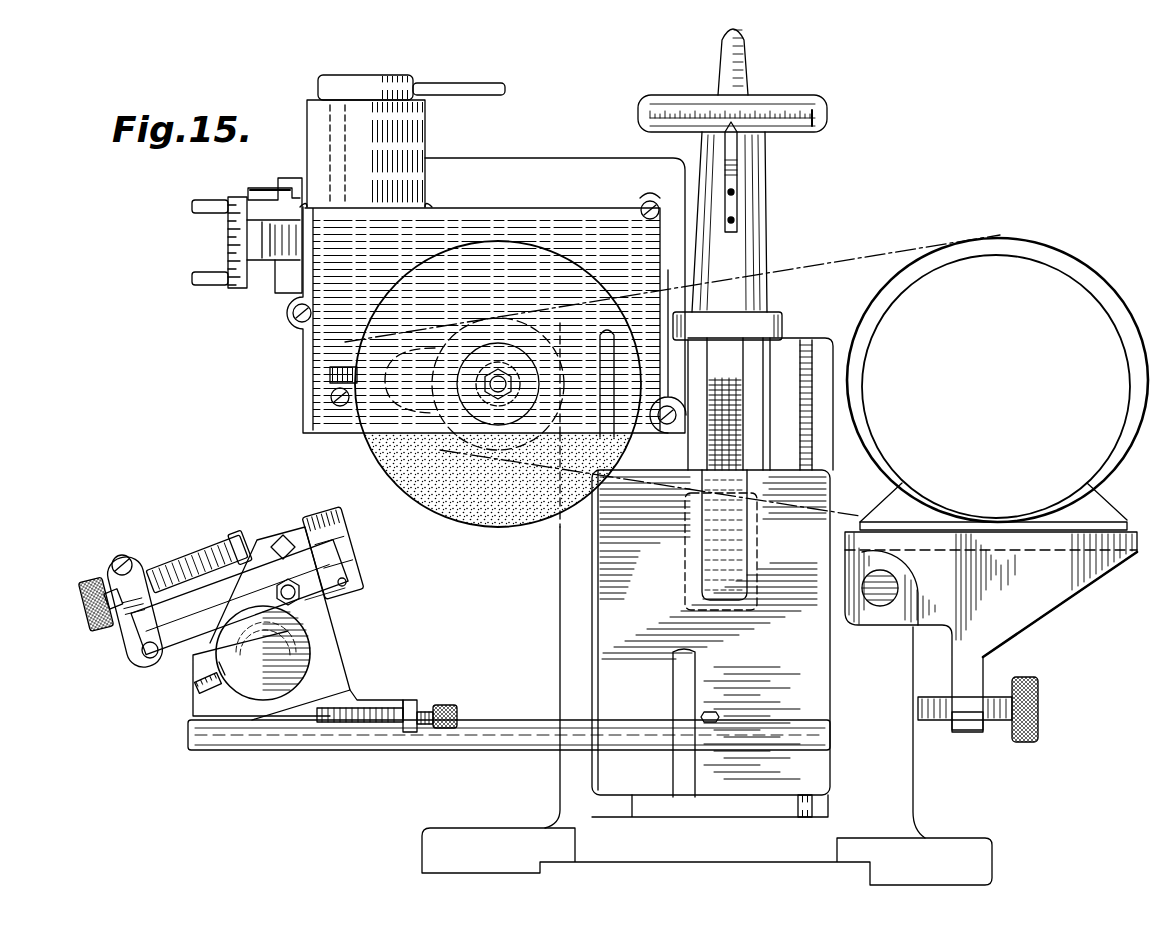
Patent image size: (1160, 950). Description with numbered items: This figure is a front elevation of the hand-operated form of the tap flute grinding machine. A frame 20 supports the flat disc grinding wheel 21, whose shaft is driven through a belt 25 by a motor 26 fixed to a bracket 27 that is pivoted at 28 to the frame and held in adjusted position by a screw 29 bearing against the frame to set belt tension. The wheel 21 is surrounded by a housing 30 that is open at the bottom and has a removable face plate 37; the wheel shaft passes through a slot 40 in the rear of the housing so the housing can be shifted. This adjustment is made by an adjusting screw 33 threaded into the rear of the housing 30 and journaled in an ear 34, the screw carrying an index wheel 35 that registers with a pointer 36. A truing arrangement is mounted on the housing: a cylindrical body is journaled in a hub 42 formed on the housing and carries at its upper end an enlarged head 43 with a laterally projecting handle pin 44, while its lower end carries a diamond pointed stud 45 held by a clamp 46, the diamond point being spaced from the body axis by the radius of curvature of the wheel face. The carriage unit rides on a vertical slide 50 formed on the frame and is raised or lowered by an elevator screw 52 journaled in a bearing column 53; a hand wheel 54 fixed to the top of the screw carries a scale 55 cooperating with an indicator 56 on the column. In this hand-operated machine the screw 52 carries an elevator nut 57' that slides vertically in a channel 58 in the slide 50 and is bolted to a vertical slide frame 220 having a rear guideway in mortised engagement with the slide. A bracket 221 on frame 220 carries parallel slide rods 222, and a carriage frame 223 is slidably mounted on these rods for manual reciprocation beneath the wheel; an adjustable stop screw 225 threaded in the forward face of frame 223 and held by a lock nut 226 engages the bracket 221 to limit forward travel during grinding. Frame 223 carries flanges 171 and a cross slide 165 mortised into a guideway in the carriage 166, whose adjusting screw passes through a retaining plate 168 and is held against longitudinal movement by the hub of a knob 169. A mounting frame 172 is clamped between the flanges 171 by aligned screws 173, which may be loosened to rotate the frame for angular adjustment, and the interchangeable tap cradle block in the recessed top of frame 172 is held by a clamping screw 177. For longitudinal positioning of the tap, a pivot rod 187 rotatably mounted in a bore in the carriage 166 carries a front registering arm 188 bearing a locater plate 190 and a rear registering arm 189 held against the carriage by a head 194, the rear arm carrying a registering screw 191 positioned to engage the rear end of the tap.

The frame 20 is at (568, 548).
The grinding wheel 21 is at (382, 440).
The belt 25 is at (818, 267).
The motor 26 is at (997, 384).
The bracket 27 is at (1036, 607).
The pivot 28 is at (886, 606).
The screw 29 is at (940, 720).
The housing 30 is at (505, 208).
The adjusting screw 33 is at (277, 265).
The ear 34 is at (295, 220).
The index wheel 35 is at (228, 218).
The pointer 36 is at (268, 187).
The face plate 37 is at (593, 336).
The slot 40 is at (498, 427).
The hub 42 is at (418, 132).
The head 43 is at (362, 88).
The handle pin 44 is at (465, 87).
The diamond pointed stud 45 is at (348, 368).
The clamp 46 is at (330, 398).
The vertical slide 50 is at (783, 350).
The elevator screw 52 is at (758, 562).
The bearing column 53 is at (752, 210).
The hand wheel 54 is at (787, 103).
The scale 55 is at (740, 157).
The indicator 56 is at (828, 118).
The elevator nut 57' is at (748, 517).
The channel 58 is at (760, 417).
The transverse slide 165 is at (195, 690).
The carriage 166 is at (196, 668).
The retaining plate 168 is at (305, 690).
The knob 169 is at (297, 632).
The flanges 171 is at (345, 593).
The mounting frame 172 is at (239, 597).
The screws 173 is at (286, 590).
The clamping screw 177 is at (283, 535).
The pivot rod 187 is at (133, 650).
The front registering arm 188 is at (336, 552).
The rear registering arm 189 is at (122, 555).
The locater plate 190 is at (312, 517).
The registering screw 191 is at (172, 565).
The head 194 is at (138, 665).
The vertical slide frame 220 is at (608, 598).
The bracket 221 is at (768, 725).
The slide rods 222 is at (478, 745).
The carriage frame 223 is at (360, 700).
The stop screw 225 is at (447, 705).
The lock nut 226 is at (415, 700).